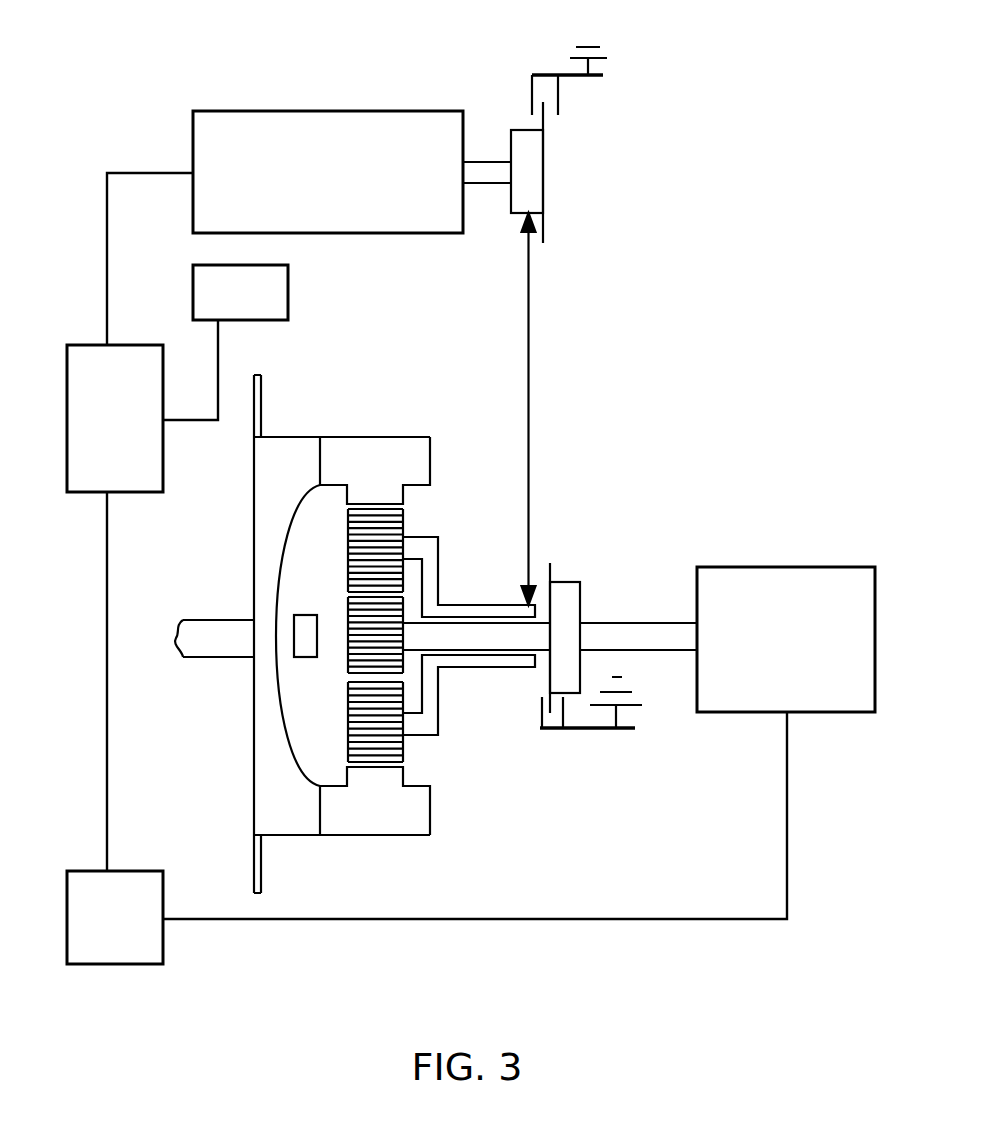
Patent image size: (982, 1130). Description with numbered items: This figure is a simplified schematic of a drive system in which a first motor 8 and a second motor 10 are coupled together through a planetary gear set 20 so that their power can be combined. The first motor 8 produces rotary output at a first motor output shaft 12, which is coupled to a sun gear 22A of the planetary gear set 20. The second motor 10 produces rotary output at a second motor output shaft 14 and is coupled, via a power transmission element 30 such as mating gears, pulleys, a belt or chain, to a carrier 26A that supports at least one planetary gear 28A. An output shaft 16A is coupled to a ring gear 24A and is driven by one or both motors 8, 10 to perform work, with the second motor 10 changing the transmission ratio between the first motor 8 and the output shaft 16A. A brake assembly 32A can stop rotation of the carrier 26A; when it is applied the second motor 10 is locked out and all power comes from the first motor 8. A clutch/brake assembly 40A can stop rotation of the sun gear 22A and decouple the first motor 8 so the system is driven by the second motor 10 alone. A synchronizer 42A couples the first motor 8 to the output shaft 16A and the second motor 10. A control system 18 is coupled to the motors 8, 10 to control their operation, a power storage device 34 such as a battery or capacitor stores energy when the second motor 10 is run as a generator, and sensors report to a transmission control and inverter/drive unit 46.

The first motor 8 is at (784, 583).
The second motor 10 is at (327, 137).
The first motor output shaft 12 is at (605, 628).
The second motor output shaft 14 is at (488, 162).
The output shaft 16A is at (213, 637).
The control system 18 is at (137, 885).
The planetary gear set 20 is at (458, 748).
The sun gear 22A is at (348, 655).
The ring gear 24A is at (380, 452).
The carrier 26A is at (432, 550).
The planetary gear 28A is at (347, 540).
The power transmission element 30 is at (529, 378).
The brake assembly 32A is at (558, 100).
The power storage device 34 is at (273, 295).
The clutch/brake assembly 40A is at (548, 735).
The synchronizer 42A is at (303, 637).
The transmission control and inverter/drive unit 46 is at (135, 452).